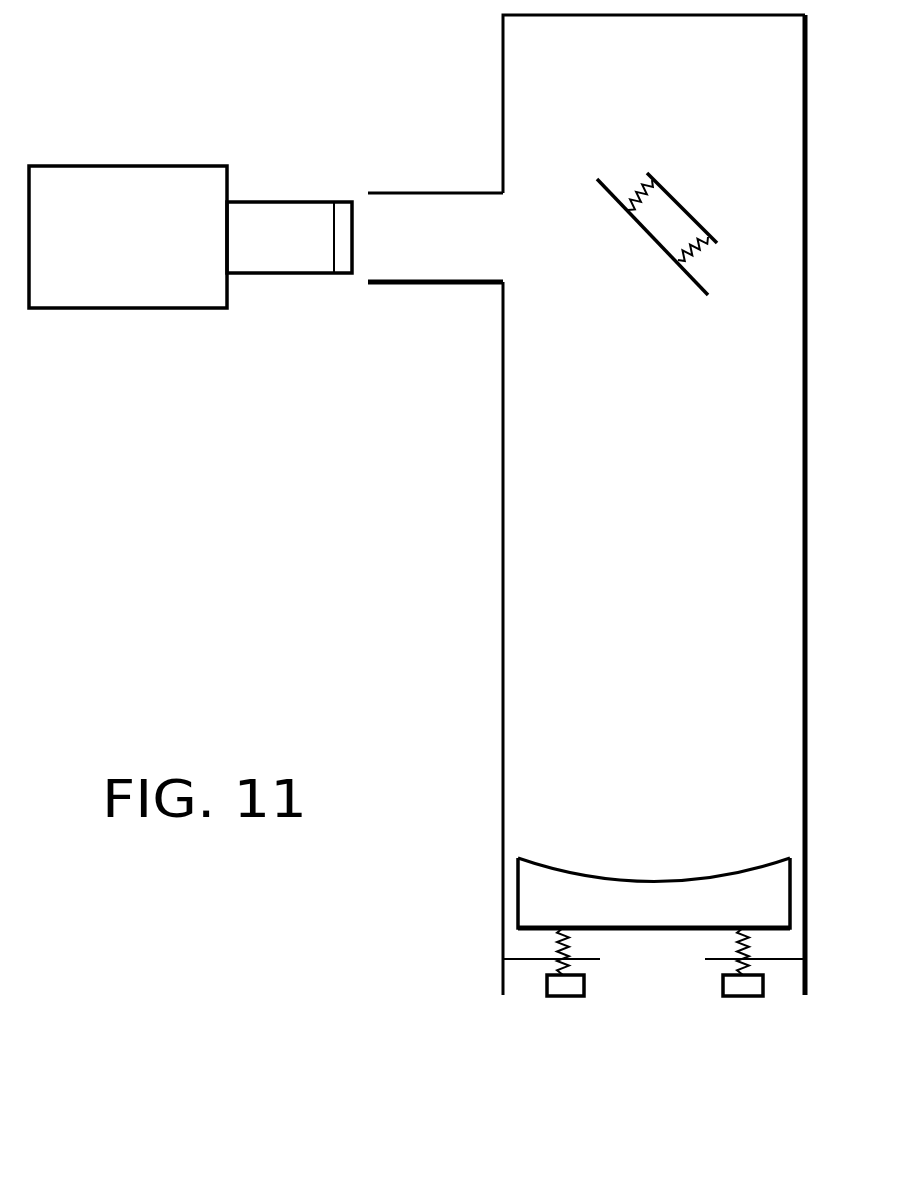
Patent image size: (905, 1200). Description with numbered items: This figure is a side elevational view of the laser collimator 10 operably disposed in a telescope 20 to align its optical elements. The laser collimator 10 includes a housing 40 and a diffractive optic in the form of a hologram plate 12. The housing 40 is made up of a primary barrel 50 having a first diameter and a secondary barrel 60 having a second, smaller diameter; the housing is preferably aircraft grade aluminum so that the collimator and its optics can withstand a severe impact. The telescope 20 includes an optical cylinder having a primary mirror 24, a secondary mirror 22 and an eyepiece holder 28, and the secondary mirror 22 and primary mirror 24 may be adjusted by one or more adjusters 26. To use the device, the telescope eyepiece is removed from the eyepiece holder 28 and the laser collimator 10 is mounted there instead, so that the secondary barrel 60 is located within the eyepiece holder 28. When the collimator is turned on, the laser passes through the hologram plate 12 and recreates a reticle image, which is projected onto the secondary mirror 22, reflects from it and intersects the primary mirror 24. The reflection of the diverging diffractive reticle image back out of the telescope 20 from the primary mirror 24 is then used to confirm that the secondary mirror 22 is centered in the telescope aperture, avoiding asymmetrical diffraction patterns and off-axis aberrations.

The laser collimator 10 is at (115, 328).
The hologram plate 12 is at (342, 213).
The telescope 20 is at (503, 603).
The secondary mirror 22 is at (703, 280).
The primary mirror 24 is at (518, 898).
The adjusters 26 is at (586, 989).
The eyepiece holder 28 is at (427, 285).
The housing 40 is at (30, 129).
The primary barrel 50 is at (140, 248).
The secondary barrel 60 is at (292, 248).